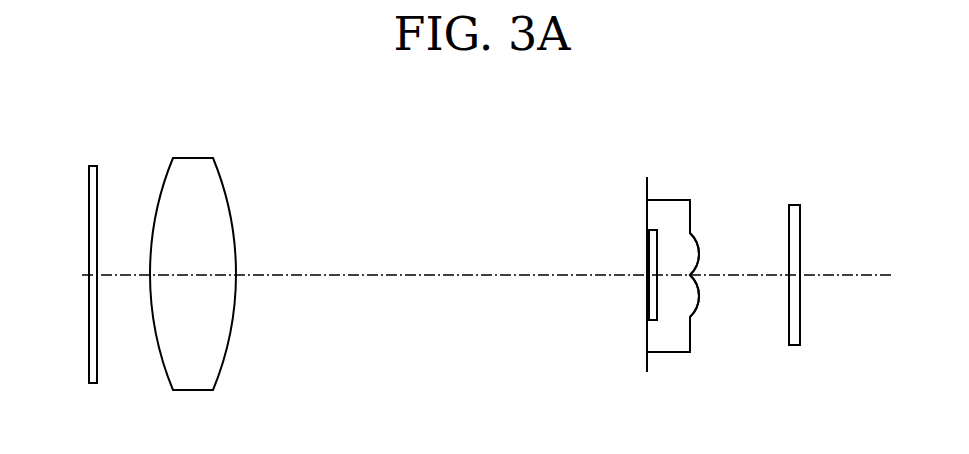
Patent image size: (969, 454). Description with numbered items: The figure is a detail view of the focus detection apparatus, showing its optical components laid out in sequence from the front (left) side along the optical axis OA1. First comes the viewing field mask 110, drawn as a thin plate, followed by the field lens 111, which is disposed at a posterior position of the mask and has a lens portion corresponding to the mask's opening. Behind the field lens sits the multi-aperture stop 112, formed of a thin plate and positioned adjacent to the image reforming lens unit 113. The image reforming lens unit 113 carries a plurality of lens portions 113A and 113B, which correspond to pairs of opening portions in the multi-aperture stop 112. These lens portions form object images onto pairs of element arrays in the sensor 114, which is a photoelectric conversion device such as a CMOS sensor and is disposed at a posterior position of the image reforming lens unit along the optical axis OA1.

The optical axis OA1 is at (403, 272).
The viewing field mask 110 is at (97, 369).
The field lens 111 is at (217, 377).
The multi-aperture stop 112 is at (645, 192).
The image reforming lens unit 113 is at (692, 337).
The lens portion 113A is at (698, 243).
The lens portion 113B is at (700, 300).
The sensor 114 is at (800, 335).